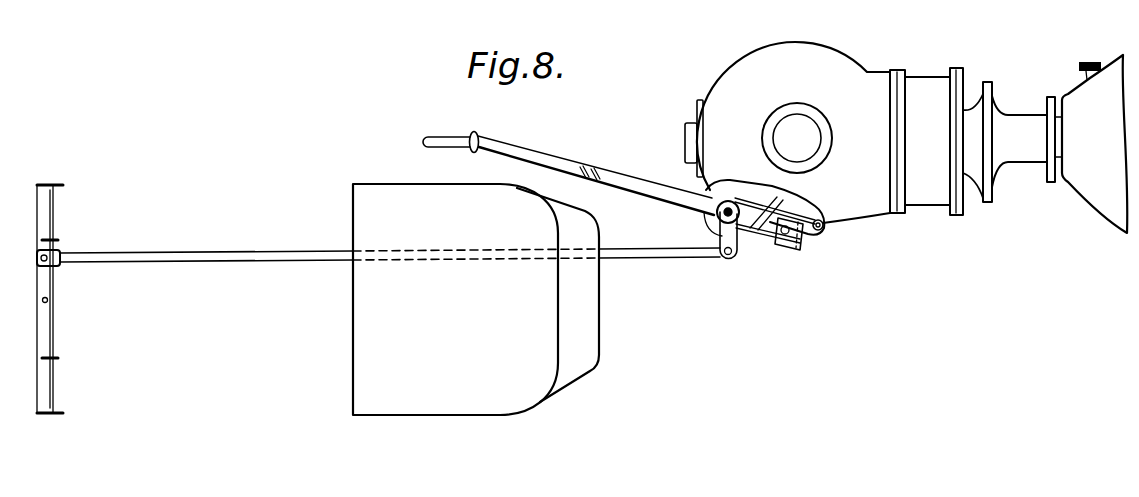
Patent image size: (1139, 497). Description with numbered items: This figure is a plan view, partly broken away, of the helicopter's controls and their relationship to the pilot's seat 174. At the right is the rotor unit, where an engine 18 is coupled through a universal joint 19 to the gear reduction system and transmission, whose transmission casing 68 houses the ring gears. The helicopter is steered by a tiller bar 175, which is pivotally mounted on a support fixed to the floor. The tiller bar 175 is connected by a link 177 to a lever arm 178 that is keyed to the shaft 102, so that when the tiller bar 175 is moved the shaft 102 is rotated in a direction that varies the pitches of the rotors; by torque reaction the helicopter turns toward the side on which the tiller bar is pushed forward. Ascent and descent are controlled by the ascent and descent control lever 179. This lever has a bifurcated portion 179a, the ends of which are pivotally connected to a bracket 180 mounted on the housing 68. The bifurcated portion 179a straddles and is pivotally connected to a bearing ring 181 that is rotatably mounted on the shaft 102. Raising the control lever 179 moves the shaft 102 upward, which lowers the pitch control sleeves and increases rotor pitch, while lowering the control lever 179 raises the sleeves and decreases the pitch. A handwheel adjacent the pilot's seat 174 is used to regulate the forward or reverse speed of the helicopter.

The engine 18 is at (1120, 52).
The universal joint 19 is at (965, 108).
The transmission casing 68 is at (847, 82).
The shaft 102 is at (716, 213).
The pilot's seat 174 is at (460, 390).
The tiller bar 175 is at (45, 330).
The link 177 is at (287, 256).
The lever arm 178 is at (718, 238).
The ascent and descent control lever 179 is at (545, 152).
The bifurcated portion 179a is at (752, 232).
The bracket 180 is at (803, 237).
The bearing ring 181 is at (707, 193).